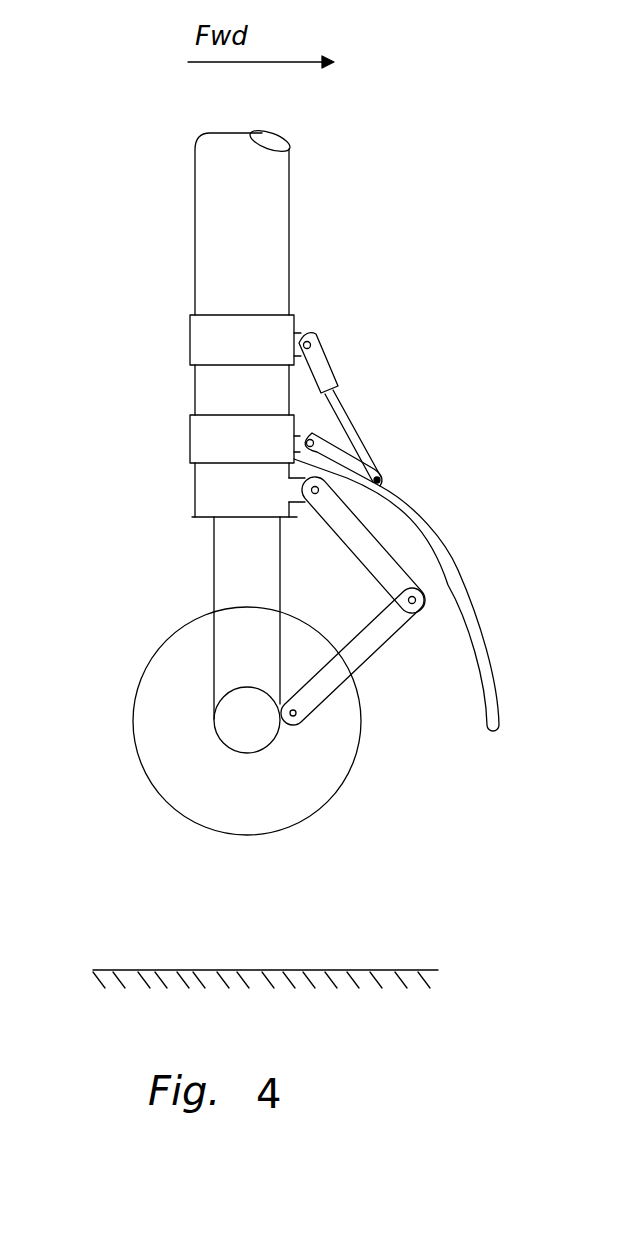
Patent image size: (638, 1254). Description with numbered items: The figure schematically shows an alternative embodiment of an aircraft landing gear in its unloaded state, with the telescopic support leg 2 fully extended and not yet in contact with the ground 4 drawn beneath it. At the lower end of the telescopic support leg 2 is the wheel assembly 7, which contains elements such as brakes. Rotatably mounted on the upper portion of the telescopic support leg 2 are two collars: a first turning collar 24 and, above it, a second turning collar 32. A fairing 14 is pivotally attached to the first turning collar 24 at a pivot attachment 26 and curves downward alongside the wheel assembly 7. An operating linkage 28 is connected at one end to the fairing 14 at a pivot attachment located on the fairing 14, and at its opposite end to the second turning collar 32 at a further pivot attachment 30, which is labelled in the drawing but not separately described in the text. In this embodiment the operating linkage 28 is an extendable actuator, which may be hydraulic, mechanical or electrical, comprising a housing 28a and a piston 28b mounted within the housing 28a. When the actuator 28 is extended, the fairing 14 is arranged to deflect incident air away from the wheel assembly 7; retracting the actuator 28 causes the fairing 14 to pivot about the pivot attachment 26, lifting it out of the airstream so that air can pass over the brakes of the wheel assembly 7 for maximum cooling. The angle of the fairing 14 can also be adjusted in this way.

The telescopic support leg 2 is at (192, 238).
The ground 4 is at (377, 968).
The wheel assembly 7 is at (130, 667).
The fairing 14 is at (433, 543).
The first turning collar 24 is at (222, 443).
The pivot attachment 26 is at (323, 433).
The operating linkage 28 is at (333, 374).
The housing 28a is at (325, 356).
The piston 28b is at (316, 443).
The pivot 30 is at (311, 338).
The second turning collar 32 is at (248, 330).